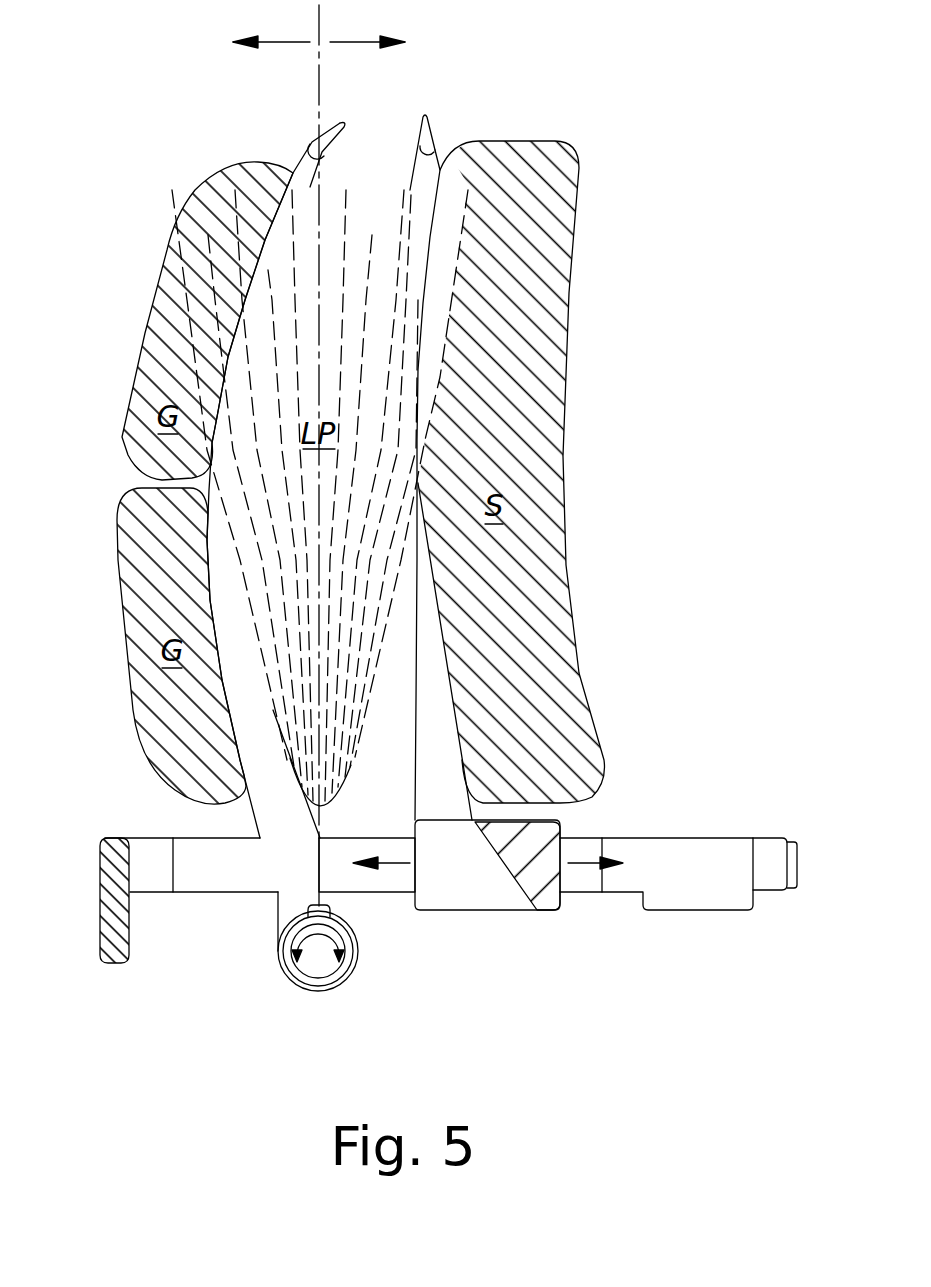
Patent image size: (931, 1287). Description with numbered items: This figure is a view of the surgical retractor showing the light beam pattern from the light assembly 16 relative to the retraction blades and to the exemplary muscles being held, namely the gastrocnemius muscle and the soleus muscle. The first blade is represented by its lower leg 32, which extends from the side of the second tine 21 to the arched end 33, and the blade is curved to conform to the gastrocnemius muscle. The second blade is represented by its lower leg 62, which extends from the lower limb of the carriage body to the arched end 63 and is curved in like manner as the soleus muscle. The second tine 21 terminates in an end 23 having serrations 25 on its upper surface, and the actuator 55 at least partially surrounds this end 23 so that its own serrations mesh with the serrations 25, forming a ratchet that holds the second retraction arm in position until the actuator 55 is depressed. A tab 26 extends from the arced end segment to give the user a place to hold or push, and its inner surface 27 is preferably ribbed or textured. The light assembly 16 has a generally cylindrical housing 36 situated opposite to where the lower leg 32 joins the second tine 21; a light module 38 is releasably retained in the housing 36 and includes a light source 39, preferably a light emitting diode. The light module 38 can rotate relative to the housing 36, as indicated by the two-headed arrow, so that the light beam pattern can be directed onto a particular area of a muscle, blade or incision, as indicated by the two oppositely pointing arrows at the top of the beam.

The light assembly 16 is at (255, 1040).
The second tine 21 is at (372, 885).
The end of the second tine 23 is at (798, 860).
The serrations of the second tine 25 is at (763, 880).
The tab 26 is at (101, 897).
The inner surface of the tab 27 is at (133, 923).
The lower leg 32 is at (263, 808).
The arched end 33 is at (343, 122).
The housing 36 is at (280, 967).
The light module 38 is at (325, 965).
The light source 39 is at (312, 906).
The actuator 55 is at (687, 868).
The lower leg 62 is at (422, 777).
The arched end 63 is at (432, 117).